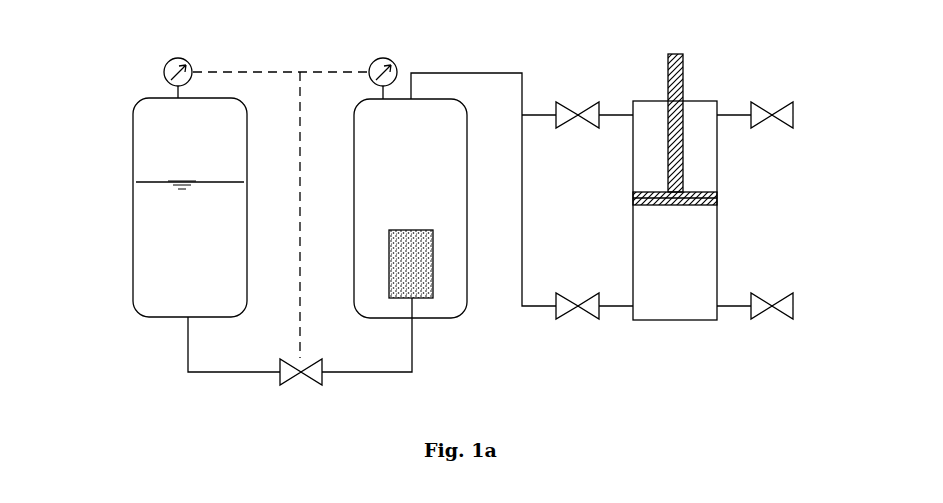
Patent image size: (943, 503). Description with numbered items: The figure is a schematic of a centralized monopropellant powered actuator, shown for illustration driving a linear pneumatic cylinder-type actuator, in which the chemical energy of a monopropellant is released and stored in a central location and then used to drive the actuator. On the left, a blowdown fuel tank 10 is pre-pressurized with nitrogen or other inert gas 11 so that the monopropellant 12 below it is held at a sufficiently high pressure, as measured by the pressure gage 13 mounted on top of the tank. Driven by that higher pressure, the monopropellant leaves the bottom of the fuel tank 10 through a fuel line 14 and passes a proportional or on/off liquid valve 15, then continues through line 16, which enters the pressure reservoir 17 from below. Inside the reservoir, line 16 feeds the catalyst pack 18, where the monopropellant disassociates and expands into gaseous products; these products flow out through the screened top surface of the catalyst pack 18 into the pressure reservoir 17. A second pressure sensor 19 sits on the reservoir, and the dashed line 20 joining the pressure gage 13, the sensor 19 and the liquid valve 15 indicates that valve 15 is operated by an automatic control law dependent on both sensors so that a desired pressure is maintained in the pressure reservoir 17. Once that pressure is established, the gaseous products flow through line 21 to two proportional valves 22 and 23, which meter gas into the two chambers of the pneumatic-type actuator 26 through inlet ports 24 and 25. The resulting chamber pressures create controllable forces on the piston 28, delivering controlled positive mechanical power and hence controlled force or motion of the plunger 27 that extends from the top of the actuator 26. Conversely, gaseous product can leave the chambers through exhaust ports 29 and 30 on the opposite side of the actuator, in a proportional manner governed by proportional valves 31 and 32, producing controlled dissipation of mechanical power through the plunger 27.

The blowdown fuel tank 10 is at (132, 211).
The inert gas 11 is at (158, 143).
The monopropellant 12 is at (158, 252).
The pressure gage 13 is at (158, 80).
The fuel line 14 is at (188, 340).
The liquid valve 15 is at (278, 386).
The line 16 is at (412, 340).
The pressure reservoir 17 is at (460, 320).
The catalyst pack 18 is at (440, 266).
The pressure sensor 19 is at (370, 60).
The dashed line 20 is at (300, 72).
The line 21 is at (512, 73).
The proportional valve 22 is at (580, 104).
The proportional valve 23 is at (580, 316).
The inlet port 24 is at (616, 118).
The inlet port 25 is at (632, 304).
The pneumatic-type actuator 26 is at (722, 248).
The plunger 27 is at (686, 70).
The piston 28 is at (658, 210).
The exhaust port 29 is at (722, 118).
The exhaust port 30 is at (722, 304).
The proportional valve 31 is at (776, 106).
The proportional valve 32 is at (776, 316).